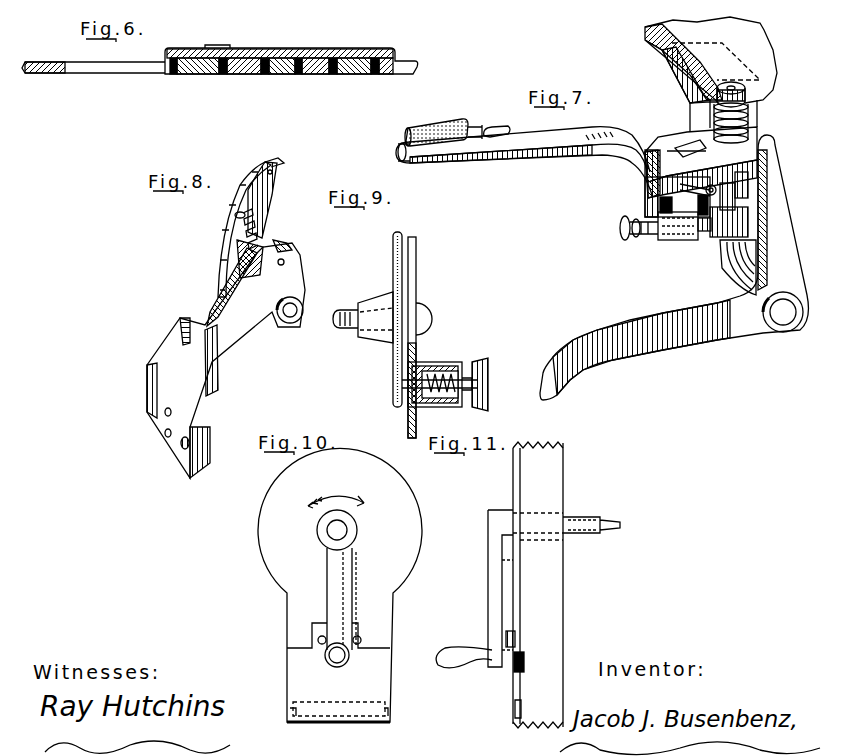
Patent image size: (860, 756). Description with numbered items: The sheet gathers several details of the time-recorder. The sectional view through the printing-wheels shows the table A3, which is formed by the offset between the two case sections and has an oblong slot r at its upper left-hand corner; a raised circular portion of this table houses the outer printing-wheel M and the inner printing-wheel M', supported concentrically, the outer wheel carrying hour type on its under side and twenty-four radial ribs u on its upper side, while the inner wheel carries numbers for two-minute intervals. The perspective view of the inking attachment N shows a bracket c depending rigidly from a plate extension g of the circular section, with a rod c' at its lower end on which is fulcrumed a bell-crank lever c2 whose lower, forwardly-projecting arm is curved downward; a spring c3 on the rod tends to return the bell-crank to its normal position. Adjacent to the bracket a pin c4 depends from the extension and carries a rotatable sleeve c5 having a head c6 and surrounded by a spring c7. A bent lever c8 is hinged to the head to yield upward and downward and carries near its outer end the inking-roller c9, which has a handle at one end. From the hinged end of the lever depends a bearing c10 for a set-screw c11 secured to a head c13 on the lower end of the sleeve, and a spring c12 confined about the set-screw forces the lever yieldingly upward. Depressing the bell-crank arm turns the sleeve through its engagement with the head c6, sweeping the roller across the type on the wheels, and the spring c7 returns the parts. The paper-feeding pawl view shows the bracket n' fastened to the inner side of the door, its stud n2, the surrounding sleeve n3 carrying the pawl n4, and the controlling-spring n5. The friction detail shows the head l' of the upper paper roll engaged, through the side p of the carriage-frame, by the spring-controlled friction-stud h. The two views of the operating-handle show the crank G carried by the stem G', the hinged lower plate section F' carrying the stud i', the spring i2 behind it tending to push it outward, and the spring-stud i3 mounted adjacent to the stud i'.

In FIG. 6, the oblong slot r is at (114, 67).
In FIG. 6, the printing-wheel M is at (194, 44).
In FIG. 6, the ribs u is at (242, 50).
In FIG. 6, the table A3 is at (285, 50).
In FIG. 6, the inner printing-wheel M' is at (315, 43).
In FIG. 6, the stud i' is at (361, 48).
In FIG. 10, the stud i' is at (312, 620).
In FIG. 7, the plate extension g is at (757, 50).
In FIG. 7, the pin c4 is at (731, 82).
In FIG. 7, the spring c7 is at (755, 133).
In FIG. 7, the bracket c is at (719, 145).
In FIG. 7, the bent lever c8 is at (547, 166).
In FIG. 7, the inking-roller c9 is at (442, 122).
In FIG. 7, the inking attachment N is at (496, 171).
In FIG. 7, the head c6 is at (755, 172).
In FIG. 7, the sleeve c5 is at (748, 192).
In FIG. 7, the head c13 is at (747, 235).
In FIG. 7, the spring c3 is at (727, 273).
In FIG. 7, the bearing c10 is at (660, 243).
In FIG. 7, the spring c12 is at (700, 232).
In FIG. 7, the set-screw c11 is at (621, 240).
In FIG. 7, the bell-crank lever c2 is at (778, 228).
In FIG. 7, the rod c' is at (789, 291).
In FIG. 8, the bracket n' is at (226, 359).
In FIG. 8, the stud n2 is at (289, 318).
In FIG. 8, the sleeve n3 is at (232, 258).
In FIG. 8, the controlling-spring n5 is at (258, 240).
In FIG. 8, the pawl n4 is at (267, 162).
In FIG. 9, the head l' is at (381, 319).
In FIG. 9, the side piece p is at (410, 286).
In FIG. 9, the friction-stud h is at (445, 367).
In FIG. 10, the lower plate section F' is at (333, 585).
In FIG. 11, the lower plate section F' is at (522, 585).
In FIG. 10, the operating-handle G is at (321, 561).
In FIG. 11, the operating-handle G is at (504, 588).
In FIG. 10, the stem G' is at (356, 576).
In FIG. 11, the stem G' is at (591, 506).
In FIG. 10, the spring-stud i3 is at (358, 636).
In FIG. 11, the spring-stud i3 is at (508, 638).
In FIG. 11, the spring i2 is at (518, 670).